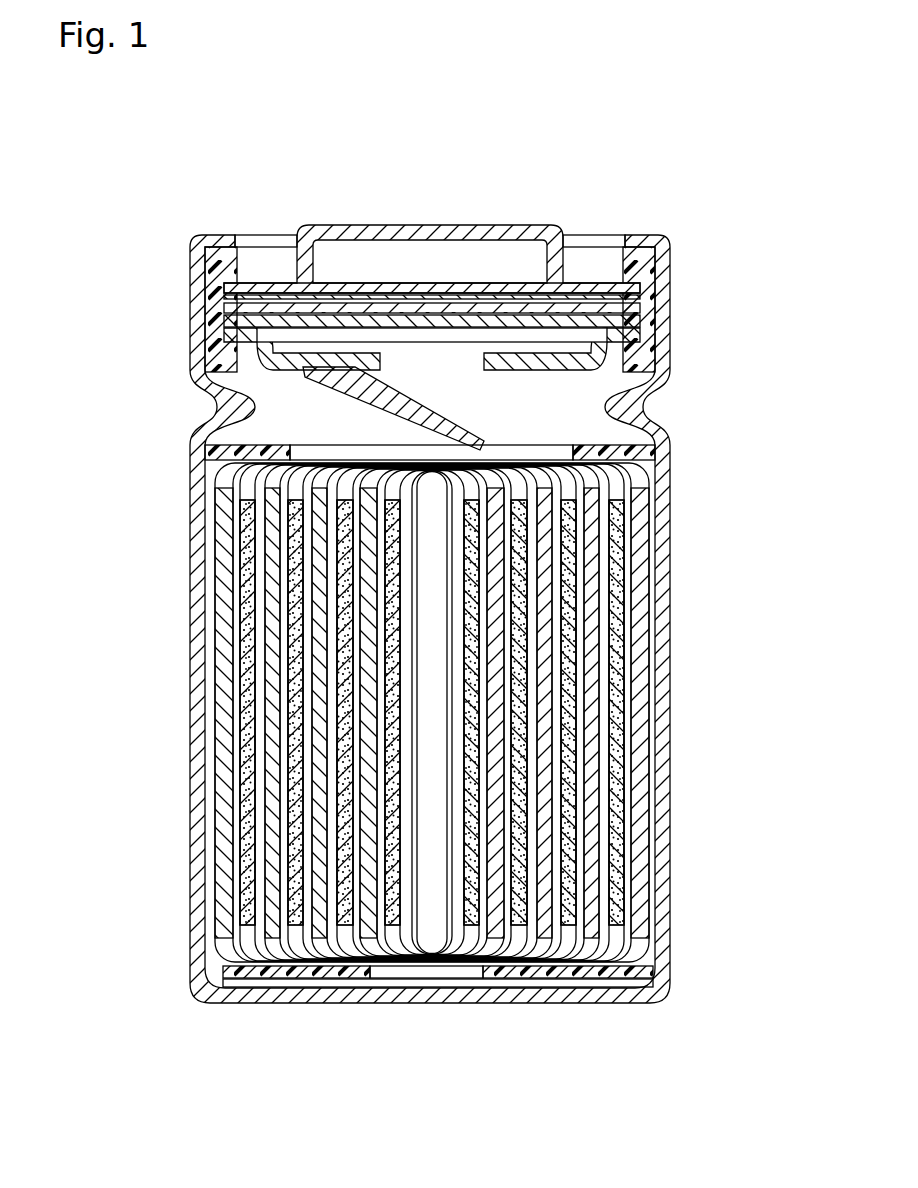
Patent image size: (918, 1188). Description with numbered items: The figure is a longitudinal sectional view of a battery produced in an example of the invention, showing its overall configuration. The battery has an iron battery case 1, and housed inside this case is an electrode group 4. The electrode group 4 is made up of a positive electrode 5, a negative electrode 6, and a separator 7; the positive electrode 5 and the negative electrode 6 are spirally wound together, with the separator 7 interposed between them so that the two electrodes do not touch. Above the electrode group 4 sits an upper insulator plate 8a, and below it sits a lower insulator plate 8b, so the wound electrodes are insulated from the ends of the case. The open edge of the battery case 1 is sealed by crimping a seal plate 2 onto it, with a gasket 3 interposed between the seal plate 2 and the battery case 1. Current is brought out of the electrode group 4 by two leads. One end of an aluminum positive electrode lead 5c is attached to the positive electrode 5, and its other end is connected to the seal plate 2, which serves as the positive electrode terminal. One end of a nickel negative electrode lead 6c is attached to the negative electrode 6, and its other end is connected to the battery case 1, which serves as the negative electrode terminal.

The battery case 1 is at (202, 600).
The seal plate 2 is at (362, 234).
The gasket 3 is at (647, 307).
The electrode group 4 is at (503, 712).
The positive electrode 5 is at (610, 798).
The positive electrode lead 5c is at (476, 446).
The negative electrode 6 is at (635, 748).
The negative electrode lead 6c is at (478, 987).
The separator 7 is at (652, 652).
The upper insulator plate 8a is at (640, 454).
The lower insulator plate 8b is at (653, 977).